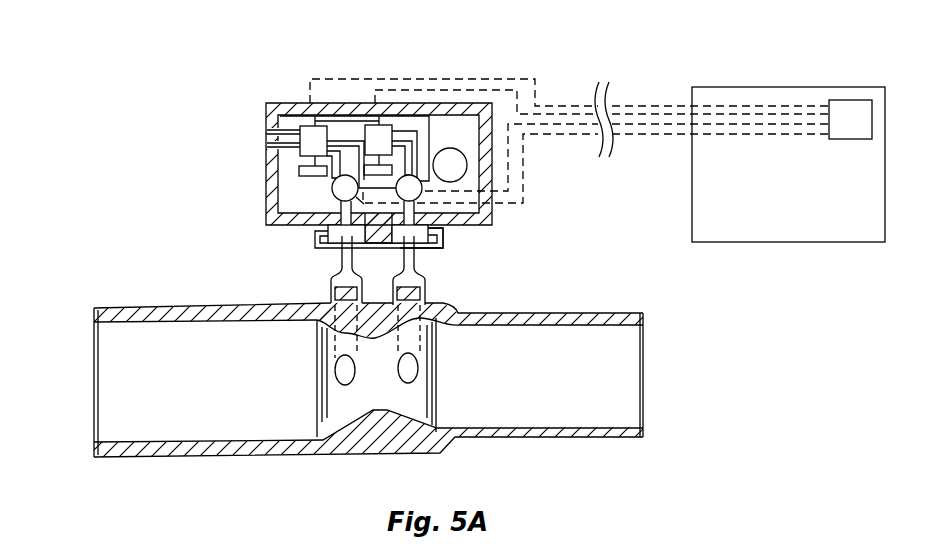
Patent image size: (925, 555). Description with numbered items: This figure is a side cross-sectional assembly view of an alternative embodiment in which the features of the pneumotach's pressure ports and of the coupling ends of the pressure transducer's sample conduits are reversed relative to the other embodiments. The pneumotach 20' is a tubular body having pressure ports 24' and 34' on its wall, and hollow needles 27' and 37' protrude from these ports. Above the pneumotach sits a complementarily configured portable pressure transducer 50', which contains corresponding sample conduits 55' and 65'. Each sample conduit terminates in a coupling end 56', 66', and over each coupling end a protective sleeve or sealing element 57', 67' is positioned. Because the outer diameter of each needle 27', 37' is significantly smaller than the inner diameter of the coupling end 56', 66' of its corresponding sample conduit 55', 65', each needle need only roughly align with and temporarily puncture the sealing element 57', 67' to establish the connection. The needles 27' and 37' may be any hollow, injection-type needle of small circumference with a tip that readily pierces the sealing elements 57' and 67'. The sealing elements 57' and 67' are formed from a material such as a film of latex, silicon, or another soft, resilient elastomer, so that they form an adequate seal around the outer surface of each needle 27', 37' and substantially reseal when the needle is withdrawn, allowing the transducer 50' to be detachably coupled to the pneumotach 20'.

The portable pressure transducer 50' is at (511, 134).
The pneumotach 20' is at (331, 371).
The sample conduit 65' is at (279, 199).
The sample conduit 55' is at (482, 206).
The coupling end 66' is at (292, 222).
The coupling end 56' is at (460, 239).
The sealing element 67' is at (332, 236).
The sealing element 57' is at (468, 252).
The hollow needle 37' is at (304, 269).
The hollow needle 27' is at (436, 270).
The pressure port 34' is at (307, 286).
The pressure port 24' is at (446, 297).